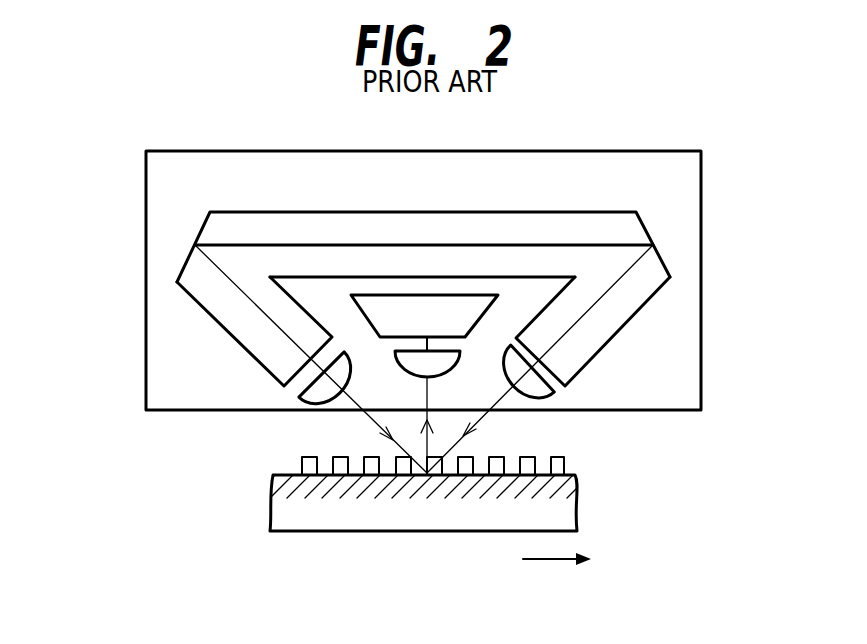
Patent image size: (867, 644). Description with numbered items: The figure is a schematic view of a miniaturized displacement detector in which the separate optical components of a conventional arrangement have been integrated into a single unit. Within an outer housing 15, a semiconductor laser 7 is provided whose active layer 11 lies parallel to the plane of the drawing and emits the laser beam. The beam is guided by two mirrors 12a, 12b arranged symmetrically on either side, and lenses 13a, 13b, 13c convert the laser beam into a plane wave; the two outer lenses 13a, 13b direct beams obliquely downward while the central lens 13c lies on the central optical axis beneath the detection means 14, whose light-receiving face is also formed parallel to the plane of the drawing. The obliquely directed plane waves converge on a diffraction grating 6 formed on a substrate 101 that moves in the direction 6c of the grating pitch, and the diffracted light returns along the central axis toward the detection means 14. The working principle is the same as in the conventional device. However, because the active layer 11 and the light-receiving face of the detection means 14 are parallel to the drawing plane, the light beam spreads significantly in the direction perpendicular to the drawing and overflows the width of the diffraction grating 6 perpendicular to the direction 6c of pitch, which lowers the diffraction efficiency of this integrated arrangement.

The semiconductor laser 7 is at (500, 172).
The housing 15 is at (702, 163).
The active layer 11 is at (569, 222).
The mirror 12a is at (658, 256).
The mirror 12b is at (199, 234).
The detection means 14 is at (397, 303).
The lens 13a is at (549, 400).
The lens 13b is at (304, 396).
The lens 13c is at (440, 359).
The diffraction grating 6 is at (563, 460).
The substrate of recording medium 101 is at (416, 518).
The direction of pitch 6c is at (546, 562).